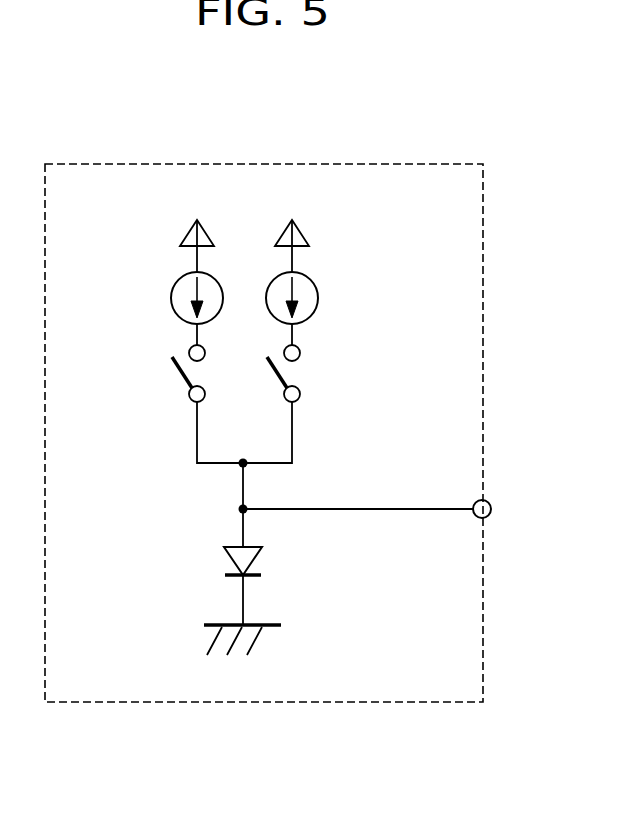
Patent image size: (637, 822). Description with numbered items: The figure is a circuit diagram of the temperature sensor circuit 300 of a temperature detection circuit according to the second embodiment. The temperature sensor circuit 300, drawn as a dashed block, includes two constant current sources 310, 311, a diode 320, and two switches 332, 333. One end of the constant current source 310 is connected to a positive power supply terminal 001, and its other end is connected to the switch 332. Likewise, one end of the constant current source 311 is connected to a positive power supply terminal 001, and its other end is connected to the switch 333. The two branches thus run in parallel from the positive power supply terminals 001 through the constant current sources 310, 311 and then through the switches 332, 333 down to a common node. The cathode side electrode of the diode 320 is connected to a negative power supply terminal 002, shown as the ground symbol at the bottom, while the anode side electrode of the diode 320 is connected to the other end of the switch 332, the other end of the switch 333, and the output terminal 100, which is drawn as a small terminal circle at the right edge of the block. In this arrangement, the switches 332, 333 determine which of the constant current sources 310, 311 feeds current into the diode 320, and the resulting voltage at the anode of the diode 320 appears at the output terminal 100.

The temperature sensor circuit 300 is at (425, 164).
The positive power supply terminal 001 is at (191, 229).
The constant current source 310 is at (172, 292).
The constant current source 311 is at (318, 292).
The switch 332 is at (175, 377).
The switch 333 is at (300, 377).
The diode 320 is at (257, 553).
The negative power supply terminal 002 is at (215, 625).
The output terminal 100 is at (490, 501).